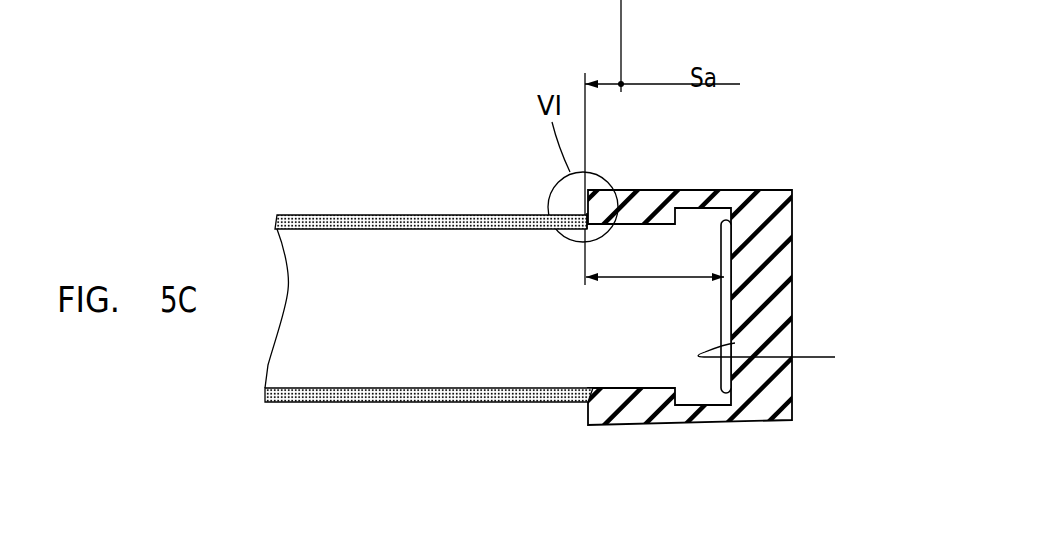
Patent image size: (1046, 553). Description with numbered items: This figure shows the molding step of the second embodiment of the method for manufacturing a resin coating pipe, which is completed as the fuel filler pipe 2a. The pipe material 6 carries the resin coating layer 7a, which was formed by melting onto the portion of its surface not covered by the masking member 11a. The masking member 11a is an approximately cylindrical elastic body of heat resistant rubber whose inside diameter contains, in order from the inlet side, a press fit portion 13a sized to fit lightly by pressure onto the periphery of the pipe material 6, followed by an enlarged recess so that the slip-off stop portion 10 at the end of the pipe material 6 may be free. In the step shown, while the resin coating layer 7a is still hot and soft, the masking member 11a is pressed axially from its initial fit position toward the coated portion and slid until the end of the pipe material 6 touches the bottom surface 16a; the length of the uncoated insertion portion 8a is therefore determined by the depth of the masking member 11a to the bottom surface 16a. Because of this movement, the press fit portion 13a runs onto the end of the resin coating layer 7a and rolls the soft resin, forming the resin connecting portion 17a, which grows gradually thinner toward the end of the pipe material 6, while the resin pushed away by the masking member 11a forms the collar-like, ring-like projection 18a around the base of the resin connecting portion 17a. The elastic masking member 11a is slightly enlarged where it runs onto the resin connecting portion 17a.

The fuel filler pipe 2a is at (418, 260).
The pipe material 6 is at (387, 247).
The resin coating layer 7a is at (450, 216).
The ring-like projection 18a is at (583, 213).
The resin connecting portion 17a is at (618, 192).
The press fit portion 13a is at (592, 227).
The insertion portion 8a is at (655, 289).
The masking member 11a is at (738, 182).
The slip-off stop portion 10 is at (725, 310).
The bottom surface 16a is at (788, 358).